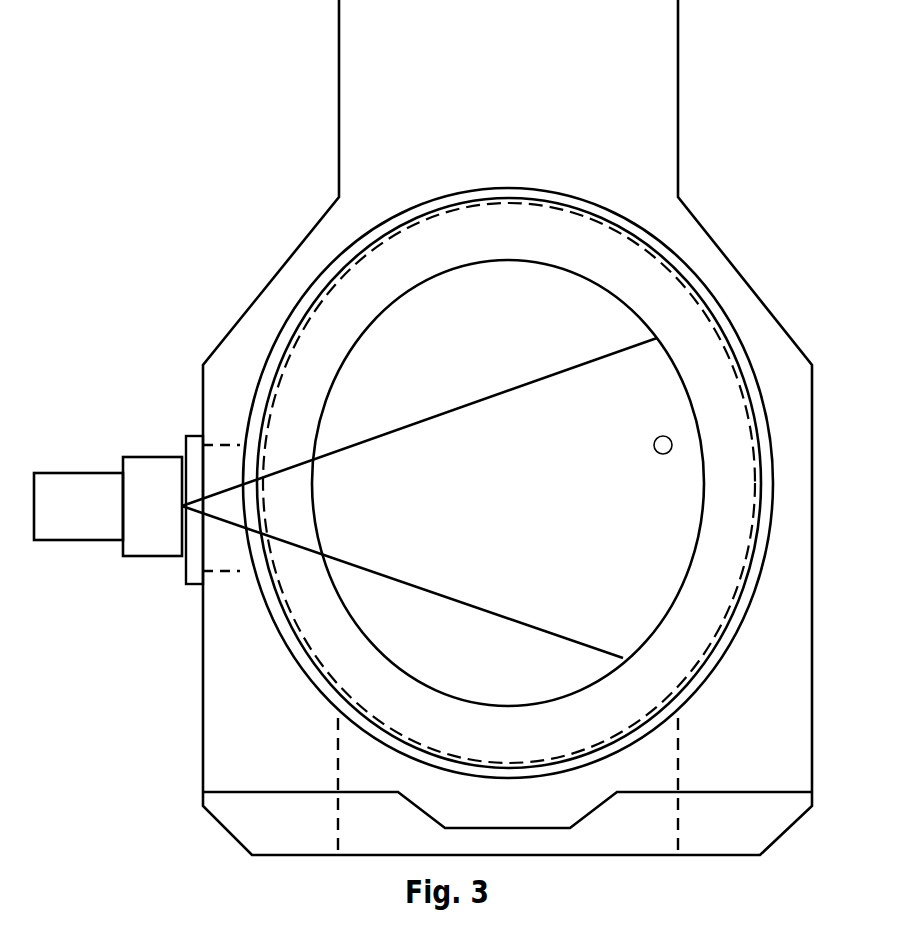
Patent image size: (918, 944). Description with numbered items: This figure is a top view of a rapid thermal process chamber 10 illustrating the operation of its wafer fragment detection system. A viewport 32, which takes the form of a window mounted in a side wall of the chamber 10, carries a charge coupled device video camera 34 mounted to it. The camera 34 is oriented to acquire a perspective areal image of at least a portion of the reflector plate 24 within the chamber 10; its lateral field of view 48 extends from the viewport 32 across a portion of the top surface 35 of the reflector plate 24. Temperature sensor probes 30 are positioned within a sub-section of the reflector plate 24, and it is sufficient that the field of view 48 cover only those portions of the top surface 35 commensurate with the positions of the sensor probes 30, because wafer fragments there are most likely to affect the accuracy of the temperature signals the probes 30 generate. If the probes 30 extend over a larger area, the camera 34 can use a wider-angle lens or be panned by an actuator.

The rapid thermal process chamber 10 is at (293, 185).
The reflector plate 24 is at (598, 284).
The temperature sensor probes 30 is at (663, 436).
The viewport 32 is at (192, 435).
The CCD video camera 34 is at (86, 472).
The top surface 35 is at (660, 567).
The lateral field of view 48 is at (365, 573).